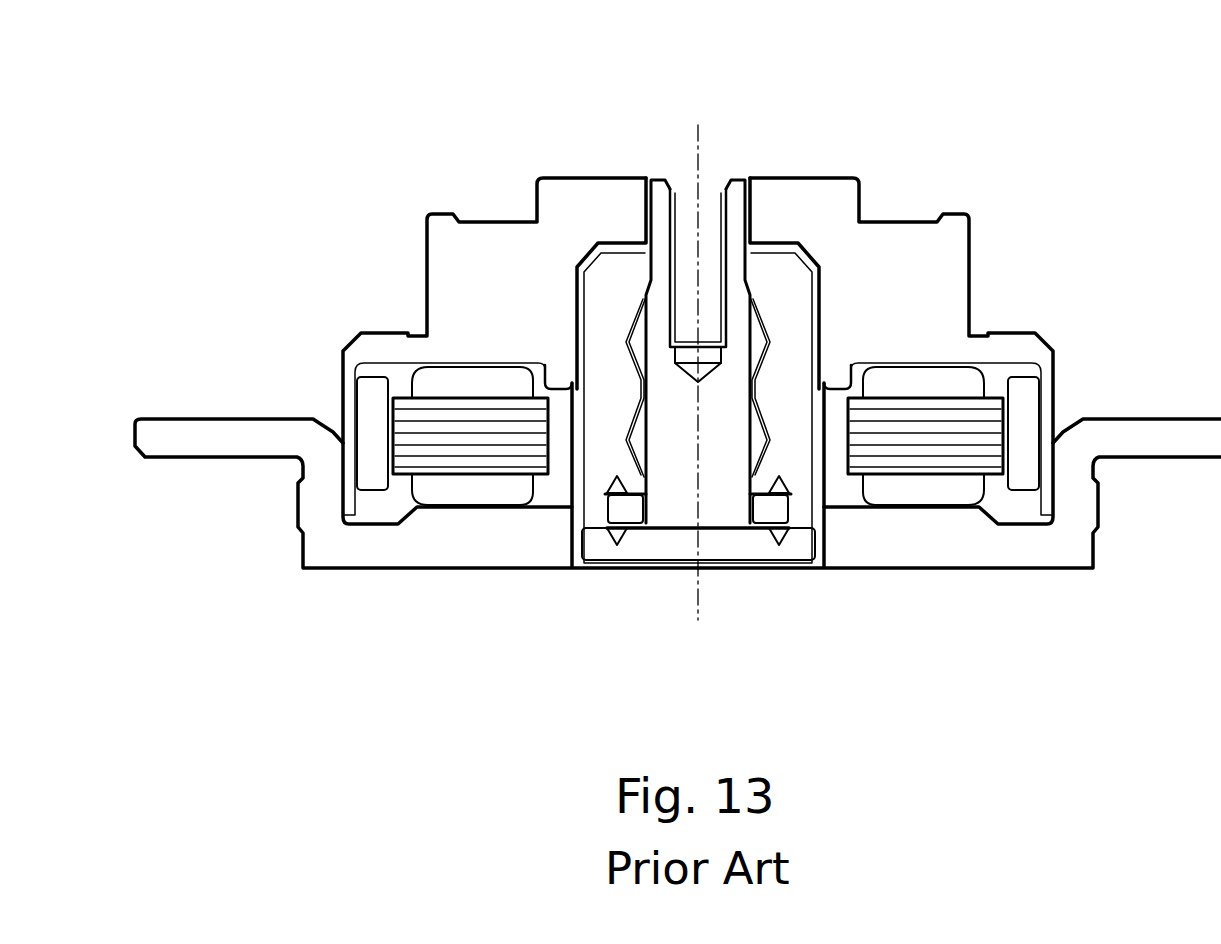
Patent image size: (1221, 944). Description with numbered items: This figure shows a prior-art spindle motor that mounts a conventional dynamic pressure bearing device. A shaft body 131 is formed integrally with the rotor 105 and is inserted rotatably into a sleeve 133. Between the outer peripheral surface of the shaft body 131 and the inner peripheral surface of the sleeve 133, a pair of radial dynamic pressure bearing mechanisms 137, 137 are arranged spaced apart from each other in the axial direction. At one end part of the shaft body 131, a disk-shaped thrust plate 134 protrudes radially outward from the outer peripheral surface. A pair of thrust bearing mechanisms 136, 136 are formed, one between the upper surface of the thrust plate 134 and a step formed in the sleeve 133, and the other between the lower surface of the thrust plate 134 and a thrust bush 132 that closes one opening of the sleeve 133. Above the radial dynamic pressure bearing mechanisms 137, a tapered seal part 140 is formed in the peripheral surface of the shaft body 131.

The rotor 105 is at (488, 177).
The shaft body 131 is at (735, 193).
The thrust bush 132 is at (742, 543).
The sleeve 133 is at (787, 303).
The thrust plate 134 is at (773, 505).
The thrust bearing mechanism 136 is at (608, 470).
The radial dynamic pressure bearing mechanism 137 is at (782, 442).
The tapered seal part 140 is at (663, 182).